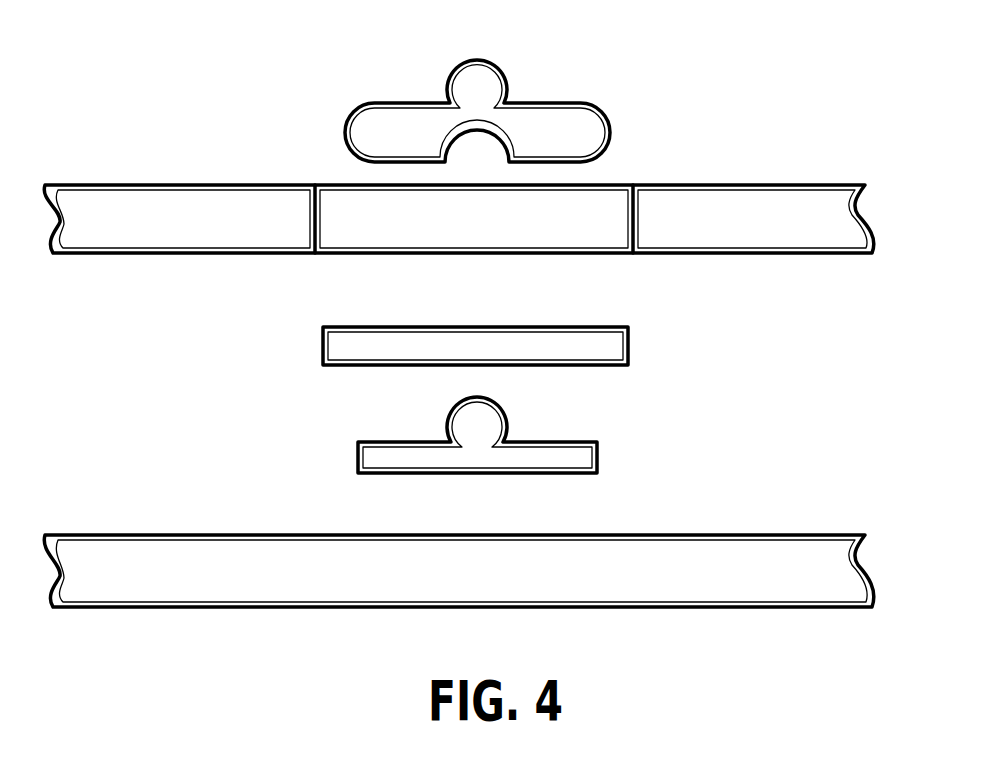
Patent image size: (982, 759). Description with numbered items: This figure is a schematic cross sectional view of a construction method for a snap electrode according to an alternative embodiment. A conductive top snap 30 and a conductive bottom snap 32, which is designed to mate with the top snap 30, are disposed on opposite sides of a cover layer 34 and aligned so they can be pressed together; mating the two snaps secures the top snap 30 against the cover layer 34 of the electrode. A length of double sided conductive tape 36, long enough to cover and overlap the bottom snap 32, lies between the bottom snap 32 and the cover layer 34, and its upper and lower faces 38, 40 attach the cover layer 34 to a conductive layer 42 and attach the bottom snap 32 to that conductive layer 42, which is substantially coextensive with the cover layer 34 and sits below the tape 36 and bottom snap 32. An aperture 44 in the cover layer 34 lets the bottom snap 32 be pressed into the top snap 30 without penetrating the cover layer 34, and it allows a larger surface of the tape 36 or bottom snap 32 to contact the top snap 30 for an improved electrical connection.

The top snap 30 is at (568, 127).
The bottom snap 32 is at (573, 453).
The cover layer 34 is at (815, 208).
The conductive tape 36 is at (605, 340).
The upper edge of spacer bar 38 is at (350, 325).
The lower edge of spacer bar 40 is at (352, 365).
The conductive layer 42 is at (823, 552).
The aperture 44 is at (533, 233).